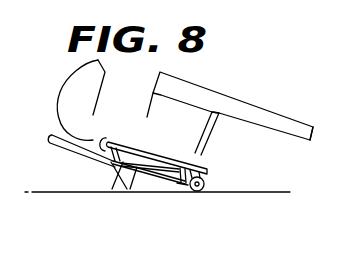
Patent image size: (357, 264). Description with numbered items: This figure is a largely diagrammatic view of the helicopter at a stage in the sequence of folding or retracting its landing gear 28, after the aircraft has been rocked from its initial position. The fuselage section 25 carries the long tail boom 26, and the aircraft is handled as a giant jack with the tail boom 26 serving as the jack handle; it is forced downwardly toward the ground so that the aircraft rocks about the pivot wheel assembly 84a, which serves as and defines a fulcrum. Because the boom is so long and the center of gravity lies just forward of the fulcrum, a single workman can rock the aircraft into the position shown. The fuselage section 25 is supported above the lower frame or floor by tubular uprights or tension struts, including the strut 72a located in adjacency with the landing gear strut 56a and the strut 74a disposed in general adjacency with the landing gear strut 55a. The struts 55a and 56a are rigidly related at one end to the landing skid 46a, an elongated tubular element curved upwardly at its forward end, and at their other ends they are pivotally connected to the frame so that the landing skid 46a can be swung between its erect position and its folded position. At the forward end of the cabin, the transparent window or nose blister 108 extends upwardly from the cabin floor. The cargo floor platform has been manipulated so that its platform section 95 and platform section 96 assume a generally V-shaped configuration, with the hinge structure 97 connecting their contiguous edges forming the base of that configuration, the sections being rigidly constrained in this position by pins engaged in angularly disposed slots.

The fuselage section 25 is at (212, 84).
The tail boom 26 is at (299, 118).
The landing gear 28 is at (154, 181).
The landing skid 46a is at (91, 158).
The support or strut 55a is at (108, 139).
The support or strut 56a is at (170, 186).
The tubular upright or tension strut 72a is at (200, 137).
The tubular upright or tension strut 74a is at (148, 111).
The pivot wheel assembly 84a is at (208, 186).
The platform section 95 is at (114, 182).
The platform section 96 is at (141, 195).
The hinge structure 97 is at (122, 197).
The transparent window or nose blister 108 is at (66, 90).